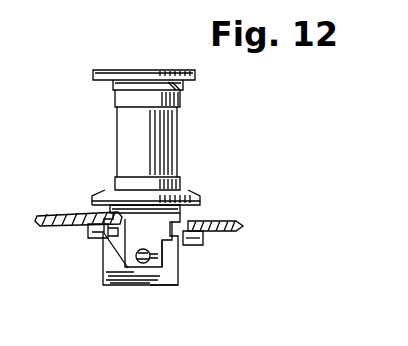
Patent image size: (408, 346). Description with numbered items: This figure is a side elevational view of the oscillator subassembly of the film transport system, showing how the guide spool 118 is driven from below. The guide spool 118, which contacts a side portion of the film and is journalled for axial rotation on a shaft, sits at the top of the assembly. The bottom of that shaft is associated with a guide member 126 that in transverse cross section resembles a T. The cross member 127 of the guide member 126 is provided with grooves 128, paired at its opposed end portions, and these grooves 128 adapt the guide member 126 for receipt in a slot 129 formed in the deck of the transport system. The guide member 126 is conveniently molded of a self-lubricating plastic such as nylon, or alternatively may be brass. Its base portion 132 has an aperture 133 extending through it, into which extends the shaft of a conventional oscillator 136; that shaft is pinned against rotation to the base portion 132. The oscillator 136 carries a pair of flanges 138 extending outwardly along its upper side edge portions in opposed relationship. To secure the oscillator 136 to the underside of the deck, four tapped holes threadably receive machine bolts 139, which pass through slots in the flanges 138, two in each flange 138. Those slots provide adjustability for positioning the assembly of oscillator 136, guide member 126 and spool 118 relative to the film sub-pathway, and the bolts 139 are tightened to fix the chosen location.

The guide spool 118 is at (183, 119).
The guide member 126 is at (153, 242).
The cross member 127 is at (145, 220).
The grooves 128 is at (110, 214).
The slot 129 is at (120, 237).
The base portion 132 is at (118, 269).
The aperture 133 is at (137, 285).
The oscillator 136 is at (169, 288).
The flanges 138 is at (208, 237).
The machine bolts 139 is at (195, 244).